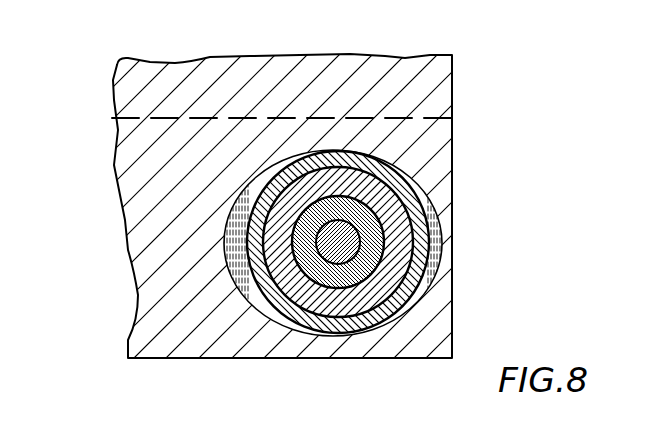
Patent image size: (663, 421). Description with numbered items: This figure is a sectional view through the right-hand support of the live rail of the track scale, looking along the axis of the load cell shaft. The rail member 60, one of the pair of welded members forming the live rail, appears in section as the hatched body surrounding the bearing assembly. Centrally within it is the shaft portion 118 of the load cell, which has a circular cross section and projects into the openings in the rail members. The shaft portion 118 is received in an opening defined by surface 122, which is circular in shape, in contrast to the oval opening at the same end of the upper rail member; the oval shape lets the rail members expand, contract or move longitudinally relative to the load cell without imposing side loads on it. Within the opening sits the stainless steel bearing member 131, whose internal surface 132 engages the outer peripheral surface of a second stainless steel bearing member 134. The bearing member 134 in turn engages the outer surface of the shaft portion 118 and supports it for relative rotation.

The rail member 60 is at (427, 79).
The shaft portion 118 is at (360, 224).
The surface defining opening 122 is at (440, 247).
The stainless steel bearing member 131 is at (410, 283).
The internal surface 132 is at (332, 167).
The stainless steel bearing member 134 is at (287, 205).